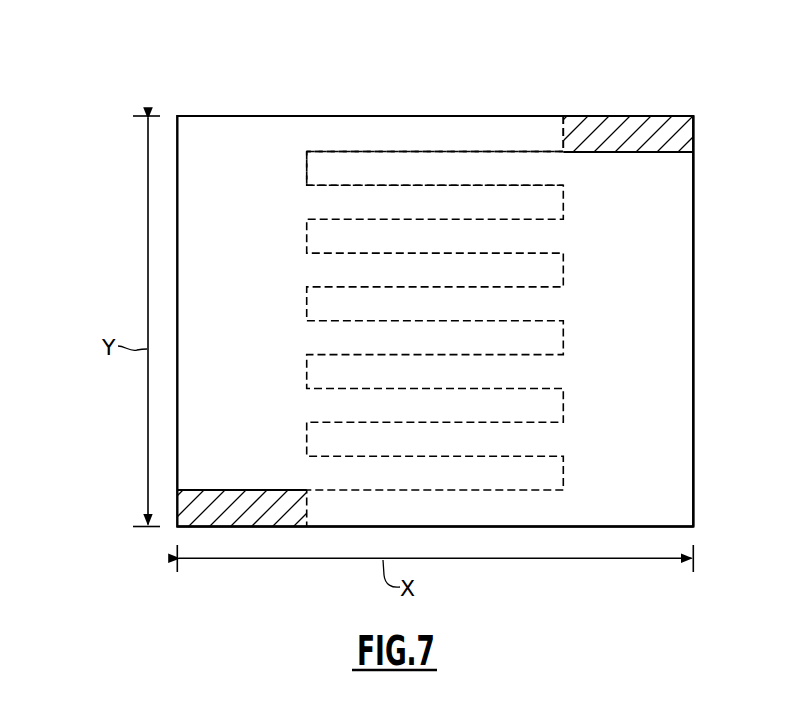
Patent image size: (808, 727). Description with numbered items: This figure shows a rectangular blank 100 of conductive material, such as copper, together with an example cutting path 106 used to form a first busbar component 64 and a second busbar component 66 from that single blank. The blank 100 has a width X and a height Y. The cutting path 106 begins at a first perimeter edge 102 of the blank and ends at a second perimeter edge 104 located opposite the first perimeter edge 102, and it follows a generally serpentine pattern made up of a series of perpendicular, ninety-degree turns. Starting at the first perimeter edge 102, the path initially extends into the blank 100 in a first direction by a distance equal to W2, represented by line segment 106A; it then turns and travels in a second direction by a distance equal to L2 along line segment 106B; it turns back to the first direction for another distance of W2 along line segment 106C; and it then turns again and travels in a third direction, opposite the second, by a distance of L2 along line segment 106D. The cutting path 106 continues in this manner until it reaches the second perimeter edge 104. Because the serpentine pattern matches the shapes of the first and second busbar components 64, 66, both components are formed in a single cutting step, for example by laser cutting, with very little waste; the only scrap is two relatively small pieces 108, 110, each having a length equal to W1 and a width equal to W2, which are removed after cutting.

The first busbar component 64 is at (203, 103).
The second busbar component 66 is at (703, 201).
The blank 100 is at (708, 157).
The first perimeter edge 102 is at (582, 114).
The second perimeter edge 104 is at (647, 527).
The cutting path 106 is at (306, 233).
The line segment 106A is at (563, 133).
The line segment 106B is at (365, 152).
The line segment 106C is at (307, 168).
The line segment 106D is at (463, 183).
The waste piece 108 is at (647, 137).
The waste piece 110 is at (188, 513).